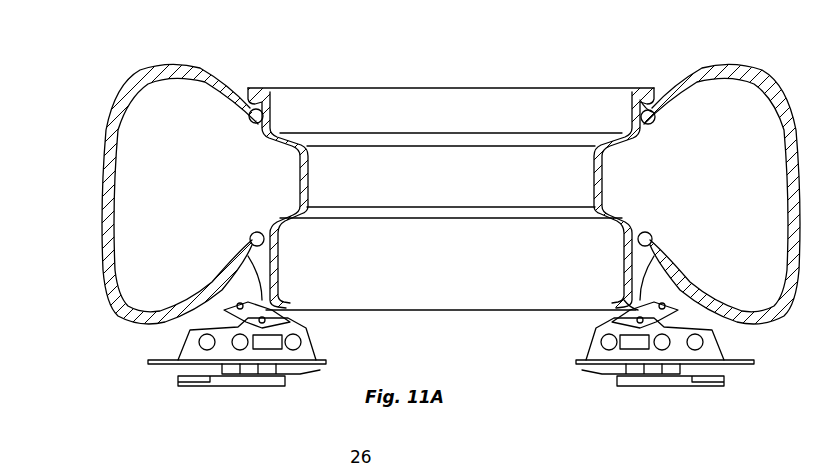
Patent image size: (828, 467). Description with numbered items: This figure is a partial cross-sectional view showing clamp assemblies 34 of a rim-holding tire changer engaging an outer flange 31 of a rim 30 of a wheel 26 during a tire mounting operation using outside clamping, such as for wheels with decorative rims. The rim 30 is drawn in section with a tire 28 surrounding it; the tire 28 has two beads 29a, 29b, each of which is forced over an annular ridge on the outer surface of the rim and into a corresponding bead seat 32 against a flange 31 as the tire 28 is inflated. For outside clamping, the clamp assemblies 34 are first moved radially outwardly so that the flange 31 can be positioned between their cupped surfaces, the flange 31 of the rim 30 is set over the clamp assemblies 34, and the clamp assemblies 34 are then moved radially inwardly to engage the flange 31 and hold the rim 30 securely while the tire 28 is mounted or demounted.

The wheel 26 is at (516, 76).
The tire 28 is at (100, 191).
The bead 29a is at (652, 124).
The bead 29b is at (655, 236).
The rim 30 is at (465, 279).
The flange 31 is at (660, 96).
The bead seat 32 is at (213, 75).
The clamp assembly 34 is at (243, 394).